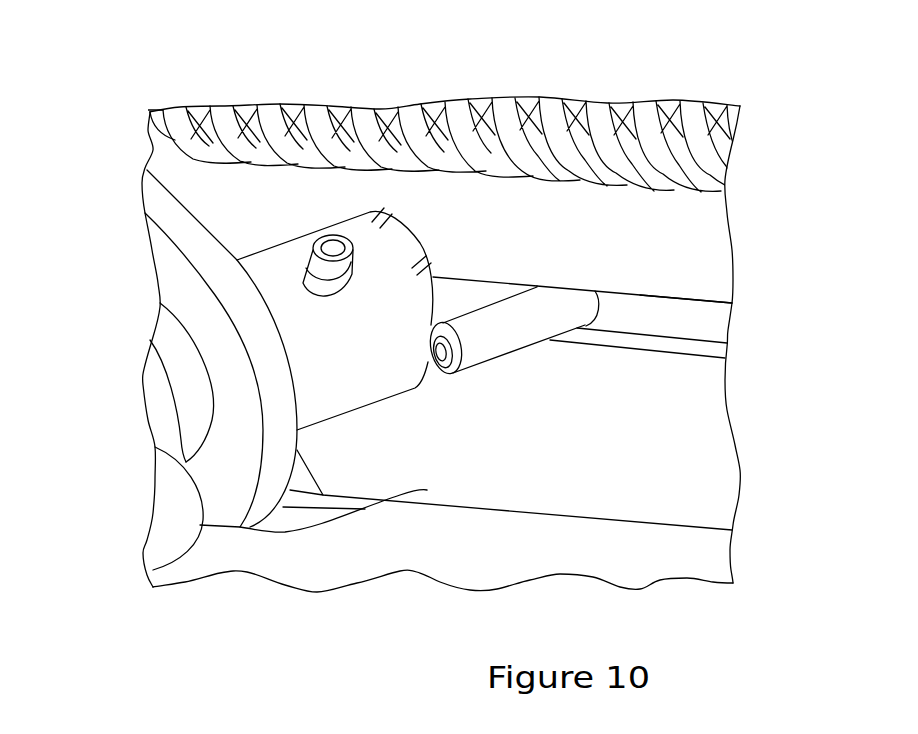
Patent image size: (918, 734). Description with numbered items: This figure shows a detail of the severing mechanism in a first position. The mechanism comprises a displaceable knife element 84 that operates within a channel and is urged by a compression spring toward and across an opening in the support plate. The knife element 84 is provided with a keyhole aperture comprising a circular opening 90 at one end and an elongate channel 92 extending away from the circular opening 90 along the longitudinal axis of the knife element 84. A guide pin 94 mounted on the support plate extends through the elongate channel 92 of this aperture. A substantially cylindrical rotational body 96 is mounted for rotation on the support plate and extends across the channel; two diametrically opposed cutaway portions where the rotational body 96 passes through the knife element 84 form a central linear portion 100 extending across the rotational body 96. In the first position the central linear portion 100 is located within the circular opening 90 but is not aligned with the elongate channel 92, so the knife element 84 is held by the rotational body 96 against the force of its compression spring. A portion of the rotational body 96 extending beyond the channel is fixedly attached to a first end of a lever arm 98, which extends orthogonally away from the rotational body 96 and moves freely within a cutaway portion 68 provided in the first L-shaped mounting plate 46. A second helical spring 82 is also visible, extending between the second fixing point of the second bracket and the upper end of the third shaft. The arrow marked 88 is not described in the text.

The second helical spring 82 is at (560, 130).
The central linear portion 100 is at (410, 245).
The circular opening 90 is at (435, 268).
The elongate channel 92 is at (703, 298).
The shaft 88 is at (705, 320).
The guide pin 94 is at (517, 330).
The rotational body 96 is at (163, 400).
The lever arm 98 is at (227, 480).
The knife element 84 is at (713, 437).
The first L-shaped mounting plate 46 is at (710, 553).
The cutaway portion 68 is at (363, 505).